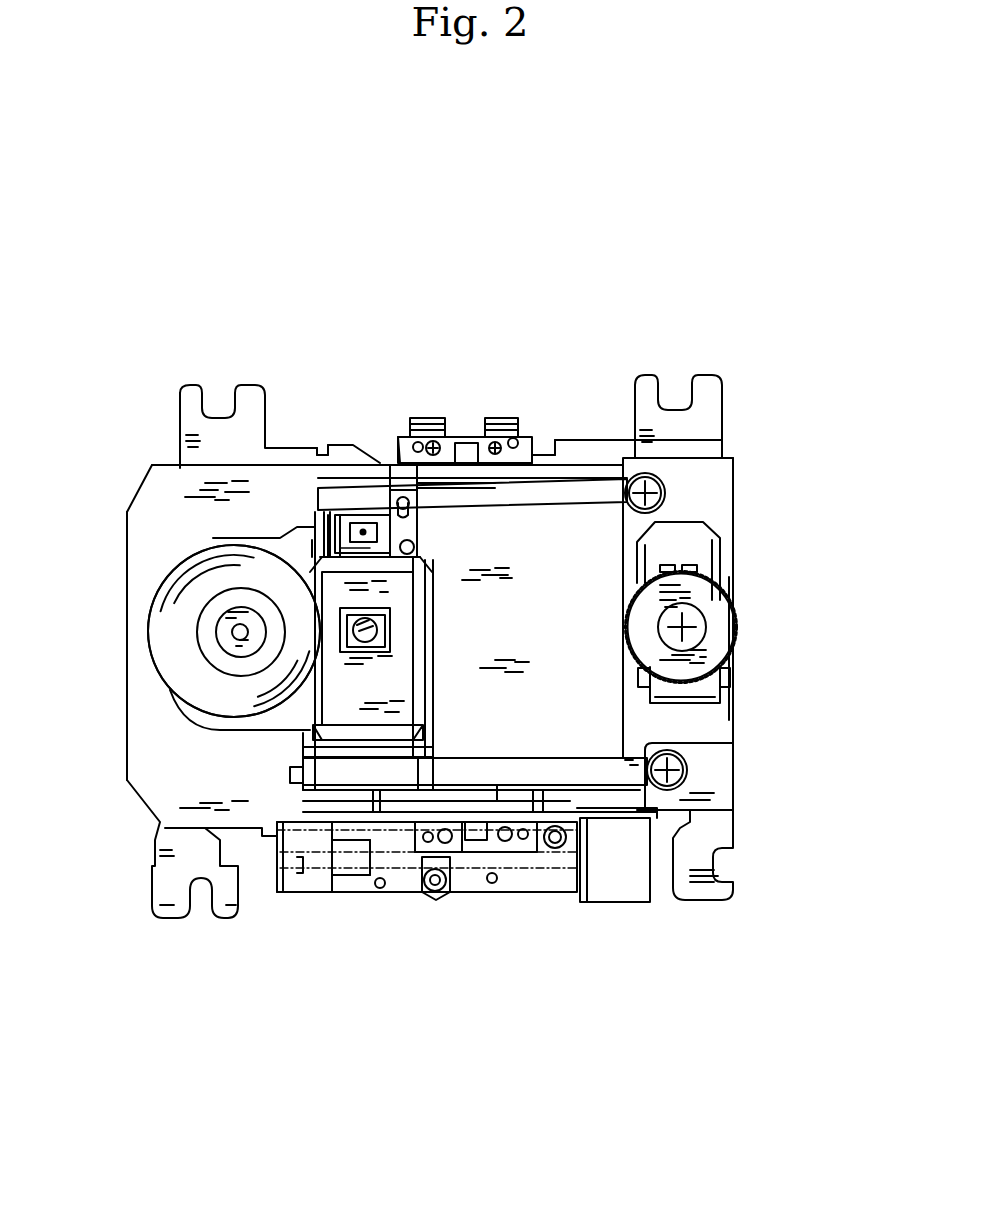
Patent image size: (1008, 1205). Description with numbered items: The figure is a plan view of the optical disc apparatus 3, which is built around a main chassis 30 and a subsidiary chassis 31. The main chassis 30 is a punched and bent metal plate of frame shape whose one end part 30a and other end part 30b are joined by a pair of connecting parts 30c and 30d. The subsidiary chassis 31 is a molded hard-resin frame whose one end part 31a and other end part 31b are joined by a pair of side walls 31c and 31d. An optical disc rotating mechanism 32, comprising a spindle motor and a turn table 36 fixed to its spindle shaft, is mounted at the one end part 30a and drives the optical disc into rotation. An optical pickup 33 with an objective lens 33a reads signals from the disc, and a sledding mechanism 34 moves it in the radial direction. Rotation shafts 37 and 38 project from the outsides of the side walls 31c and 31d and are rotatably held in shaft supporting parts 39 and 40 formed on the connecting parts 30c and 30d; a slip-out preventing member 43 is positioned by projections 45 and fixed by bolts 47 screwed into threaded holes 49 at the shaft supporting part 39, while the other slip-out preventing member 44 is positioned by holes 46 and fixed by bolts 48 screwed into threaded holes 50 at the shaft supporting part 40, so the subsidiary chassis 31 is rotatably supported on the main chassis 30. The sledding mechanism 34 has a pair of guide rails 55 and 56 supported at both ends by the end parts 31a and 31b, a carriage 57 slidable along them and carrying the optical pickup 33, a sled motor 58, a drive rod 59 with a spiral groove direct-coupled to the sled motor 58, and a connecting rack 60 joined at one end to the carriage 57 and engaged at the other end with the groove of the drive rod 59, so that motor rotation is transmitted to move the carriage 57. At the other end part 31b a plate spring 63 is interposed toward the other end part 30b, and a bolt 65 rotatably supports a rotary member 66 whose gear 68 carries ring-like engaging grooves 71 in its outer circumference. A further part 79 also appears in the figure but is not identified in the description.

The optical disc apparatus 3 is at (724, 262).
The main chassis 30 is at (732, 389).
The one end part 30a is at (210, 458).
The other end part 30b is at (705, 445).
The connecting part 30c is at (517, 800).
The connecting part 30d is at (337, 445).
The subsidiary chassis 31 is at (737, 457).
The one end part 31a is at (145, 720).
The other end part 31b is at (730, 732).
The side wall 31c is at (345, 882).
The side wall 31d is at (393, 462).
The optical disc rotating mechanism 32 is at (156, 575).
The optical pickup 33 is at (420, 643).
The objective lens 33a is at (392, 628).
The sledding mechanism 34 is at (460, 748).
The turn table 36 is at (168, 622).
The rotation shaft 37 is at (480, 852).
The rotation shaft 38 is at (468, 437).
The shaft supporting part 39 is at (553, 850).
The shaft supporting part 40 is at (540, 440).
The slip-out preventing member 43 is at (420, 860).
The slip-out preventing member 44 is at (558, 438).
The projections 45 is at (400, 860).
The holes 46 is at (410, 418).
The bolts 47 is at (497, 792).
The bolts 48 is at (449, 463).
The threaded holes 49 is at (445, 843).
The threaded holes 50 is at (426, 437).
The guide rail 55 is at (605, 768).
The guide rail 56 is at (574, 496).
The carriage 57 is at (415, 547).
The sled motor 58 is at (613, 897).
The drive rod 59 is at (330, 873).
The connecting rack 60 is at (300, 880).
The plate spring 63 is at (705, 565).
The bolt 65 is at (700, 620).
The rotary member 66 is at (730, 640).
The gear 68 is at (725, 665).
The engaging grooves 71 is at (727, 602).
The feed motor 79 is at (688, 568).